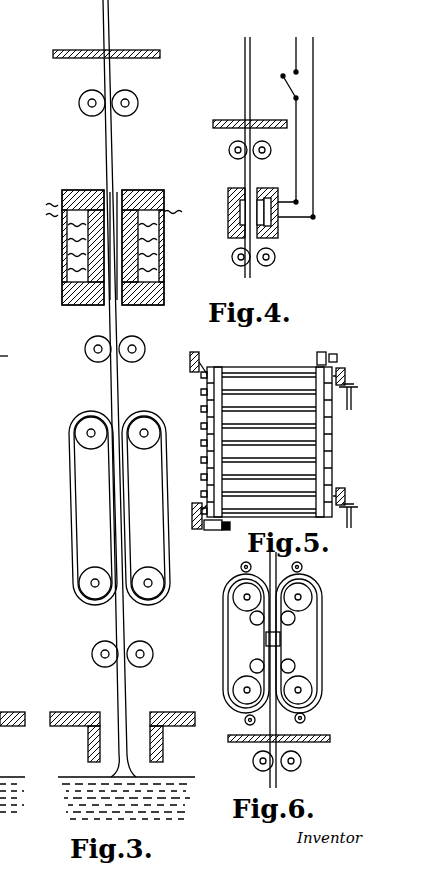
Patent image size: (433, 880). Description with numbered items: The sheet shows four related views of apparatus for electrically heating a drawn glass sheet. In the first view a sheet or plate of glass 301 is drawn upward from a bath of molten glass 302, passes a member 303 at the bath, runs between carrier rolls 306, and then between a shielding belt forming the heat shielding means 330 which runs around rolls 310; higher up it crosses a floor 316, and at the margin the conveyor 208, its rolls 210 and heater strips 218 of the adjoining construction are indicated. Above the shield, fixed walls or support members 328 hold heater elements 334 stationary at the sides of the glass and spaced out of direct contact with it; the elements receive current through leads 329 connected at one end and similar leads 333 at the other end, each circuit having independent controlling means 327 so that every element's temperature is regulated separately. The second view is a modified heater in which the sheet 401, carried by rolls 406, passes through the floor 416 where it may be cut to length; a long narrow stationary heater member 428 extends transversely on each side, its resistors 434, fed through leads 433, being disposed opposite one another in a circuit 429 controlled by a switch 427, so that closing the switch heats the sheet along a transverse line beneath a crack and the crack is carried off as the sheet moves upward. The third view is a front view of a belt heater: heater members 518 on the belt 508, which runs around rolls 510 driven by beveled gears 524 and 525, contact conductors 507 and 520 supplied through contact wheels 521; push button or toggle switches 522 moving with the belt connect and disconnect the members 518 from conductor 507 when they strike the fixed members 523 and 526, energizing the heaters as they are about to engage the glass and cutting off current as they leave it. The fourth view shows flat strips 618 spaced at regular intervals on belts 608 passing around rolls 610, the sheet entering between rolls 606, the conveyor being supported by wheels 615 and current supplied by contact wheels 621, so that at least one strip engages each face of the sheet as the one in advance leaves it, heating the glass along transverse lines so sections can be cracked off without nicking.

In FIG. 3, the conveyor 208 is at (19, 326).
In FIG. 3, the rolls 210 is at (16, 251).
In FIG. 3, the heater strips 218 is at (2, 352).
In FIG. 3, the glass sheet 301 is at (110, 37).
In FIG. 3, the bath of molten glass 302 is at (70, 778).
In FIG. 3, the bath cover plate 303 is at (60, 712).
In FIG. 3, the carrier rolls 306 is at (98, 114).
In FIG. 3, the rolls 310 is at (84, 436).
In FIG. 3, the floor 316 is at (84, 50).
In FIG. 3, the controllers 327 is at (44, 234).
In FIG. 3, the fixed walls 328 is at (75, 195).
In FIG. 3, the leads 329 is at (62, 293).
In FIG. 3, the heat shielding means 330 is at (75, 520).
In FIG. 3, the leads 333 is at (67, 273).
In FIG. 3, the heater elements 334 is at (113, 198).
In FIG. 4, the glass sheet 401 is at (245, 55).
In FIG. 4, the carrier rolls 406 is at (238, 160).
In FIG. 4, the floor 416 is at (222, 120).
In FIG. 4, the switch 427 is at (296, 95).
In FIG. 4, the stationary heater member 428 is at (228, 198).
In FIG. 4, the circuit 429 is at (315, 158).
In FIG. 4, the leads 433 is at (300, 160).
In FIG. 4, the resistors 434 is at (278, 237).
In FIG. 5, the conductor 507 is at (221, 368).
In FIG. 5, the belt 508 is at (333, 437).
In FIG. 5, the rolls 510 is at (334, 355).
In FIG. 5, the heater members 518 is at (268, 377).
In FIG. 5, the conductor 520 is at (316, 510).
In FIG. 5, the contact wheels 521 is at (319, 352).
In FIG. 5, the switches 522 is at (205, 392).
In FIG. 5, the fixed member 523 is at (190, 354).
In FIG. 5, the beveled gear 524 is at (342, 378).
In FIG. 5, the beveled gear 525 is at (358, 465).
In FIG. 5, the fixed member 526 is at (197, 508).
In FIG. 6, the rolls 606 is at (280, 770).
In FIG. 6, the belts 608 is at (304, 568).
In FIG. 6, the rolls 610 is at (238, 592).
In FIG. 6, the wheels 615 is at (297, 664).
In FIG. 6, the flat heater strips 618 is at (335, 678).
In FIG. 6, the contact wheels 621 is at (242, 565).